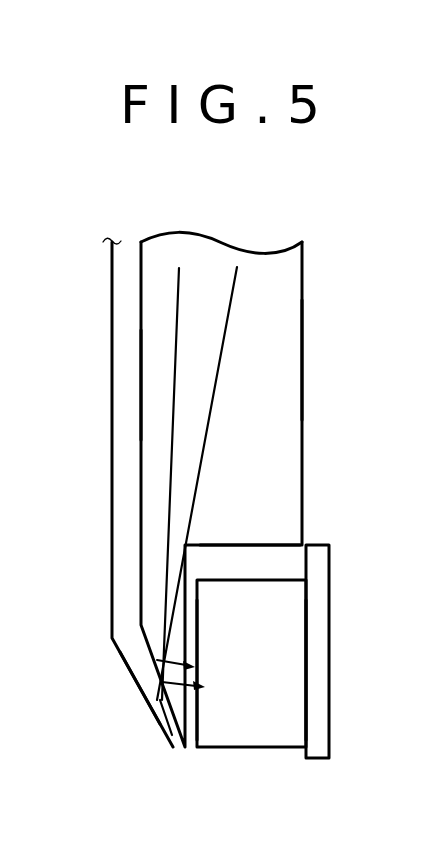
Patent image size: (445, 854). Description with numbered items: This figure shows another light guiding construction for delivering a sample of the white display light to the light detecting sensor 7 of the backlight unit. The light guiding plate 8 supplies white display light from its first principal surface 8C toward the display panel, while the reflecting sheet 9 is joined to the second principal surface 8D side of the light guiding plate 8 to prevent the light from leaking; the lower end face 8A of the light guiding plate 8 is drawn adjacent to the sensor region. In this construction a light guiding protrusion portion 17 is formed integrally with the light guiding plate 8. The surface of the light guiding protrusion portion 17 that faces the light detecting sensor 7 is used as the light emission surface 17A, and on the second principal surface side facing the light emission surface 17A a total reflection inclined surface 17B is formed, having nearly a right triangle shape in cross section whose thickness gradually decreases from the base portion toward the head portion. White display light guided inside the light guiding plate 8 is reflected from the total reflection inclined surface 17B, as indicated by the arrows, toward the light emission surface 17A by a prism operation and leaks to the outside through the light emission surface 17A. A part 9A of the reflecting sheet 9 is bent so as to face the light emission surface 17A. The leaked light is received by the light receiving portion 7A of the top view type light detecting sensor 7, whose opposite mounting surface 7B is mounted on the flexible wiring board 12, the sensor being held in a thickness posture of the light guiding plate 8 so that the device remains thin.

The light detecting sensor 7 is at (285, 613).
The light receiving portion 7A is at (190, 748).
The mounting surface 7B is at (308, 667).
The light guiding plate 8 is at (289, 282).
The lower surface of nozzle 8A is at (270, 545).
The first principal surface 8C is at (302, 353).
The second principal surface 8D is at (141, 378).
The reflecting sheet 9 is at (112, 316).
The part of the reflecting sheet 9A is at (130, 678).
The flexible wiring board 12 is at (318, 723).
The light guiding protrusion portion 17 is at (152, 578).
The light emission surface 17A is at (188, 726).
The total reflection inclined surface 17B is at (150, 648).